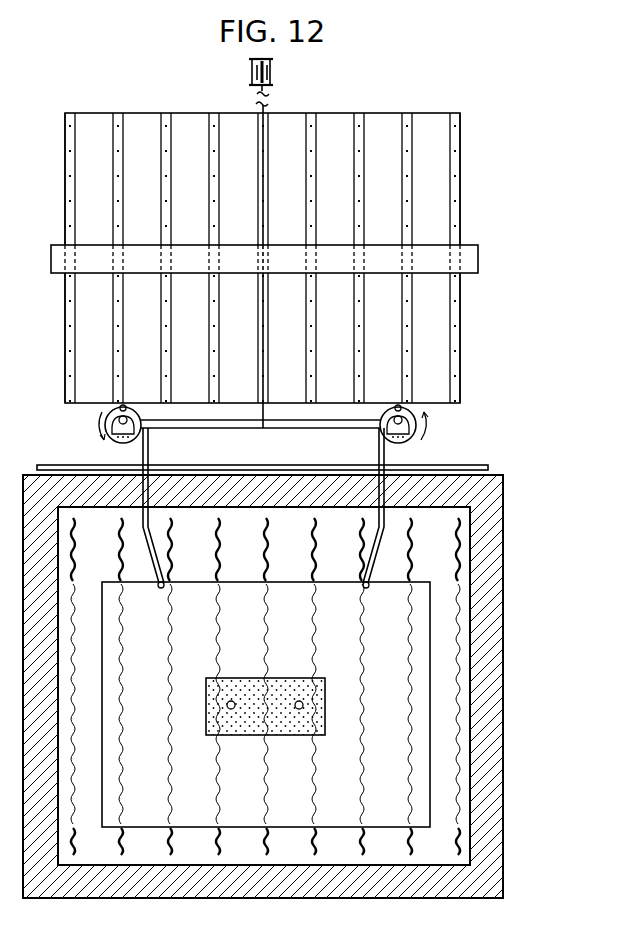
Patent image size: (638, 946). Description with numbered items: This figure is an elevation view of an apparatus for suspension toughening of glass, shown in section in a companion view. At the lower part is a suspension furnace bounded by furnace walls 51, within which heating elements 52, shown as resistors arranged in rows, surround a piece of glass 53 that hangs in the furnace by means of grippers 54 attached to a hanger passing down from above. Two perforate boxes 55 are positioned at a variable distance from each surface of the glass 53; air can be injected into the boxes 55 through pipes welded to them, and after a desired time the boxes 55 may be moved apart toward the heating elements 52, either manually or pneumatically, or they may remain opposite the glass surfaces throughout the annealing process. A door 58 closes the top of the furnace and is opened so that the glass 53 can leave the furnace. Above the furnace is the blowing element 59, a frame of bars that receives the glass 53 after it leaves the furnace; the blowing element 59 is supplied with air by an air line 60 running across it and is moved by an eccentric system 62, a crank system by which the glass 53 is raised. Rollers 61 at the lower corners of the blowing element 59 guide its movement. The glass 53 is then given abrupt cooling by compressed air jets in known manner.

The furnace walls 51 is at (497, 585).
The heating elements 52 is at (77, 772).
The piece of glass 53 is at (272, 590).
The grippers 54 is at (166, 566).
The perforate boxes 55 is at (274, 681).
The door 58 is at (272, 468).
The blowing element 59 is at (168, 329).
The air line 60 is at (473, 244).
The rollers 61 is at (432, 425).
The eccentric system 62 is at (265, 415).